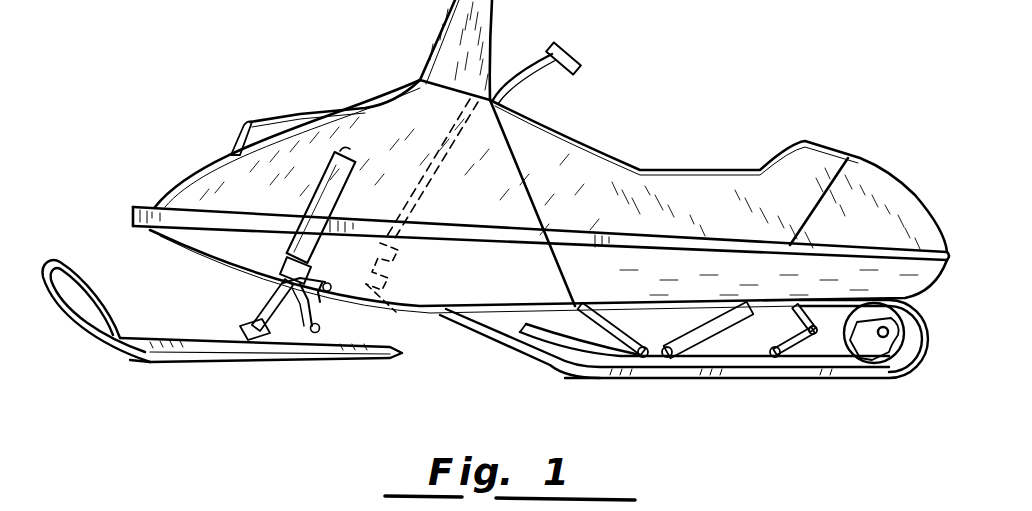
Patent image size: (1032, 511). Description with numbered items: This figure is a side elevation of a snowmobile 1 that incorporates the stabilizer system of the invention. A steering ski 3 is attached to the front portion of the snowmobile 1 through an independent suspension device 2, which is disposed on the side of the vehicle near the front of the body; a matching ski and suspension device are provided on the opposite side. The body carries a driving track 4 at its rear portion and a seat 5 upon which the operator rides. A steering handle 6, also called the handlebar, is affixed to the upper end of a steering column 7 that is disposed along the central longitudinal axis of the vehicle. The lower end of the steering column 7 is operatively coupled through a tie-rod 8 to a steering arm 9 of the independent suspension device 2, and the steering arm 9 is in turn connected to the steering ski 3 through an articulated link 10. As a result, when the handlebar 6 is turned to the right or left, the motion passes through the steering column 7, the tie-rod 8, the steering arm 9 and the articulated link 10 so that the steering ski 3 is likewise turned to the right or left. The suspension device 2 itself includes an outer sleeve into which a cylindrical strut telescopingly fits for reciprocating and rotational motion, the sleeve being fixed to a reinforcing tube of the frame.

The snowmobile 1 is at (498, 282).
The independent suspension device 2 is at (308, 201).
The steering ski 3 is at (173, 347).
The driving track 4 is at (728, 360).
The seat 5 is at (692, 190).
The steering handle 6 is at (566, 48).
The steering column 7 is at (440, 150).
The tie-rod 8 is at (392, 310).
The steering arm 9 is at (322, 292).
The articulated link 10 is at (305, 316).